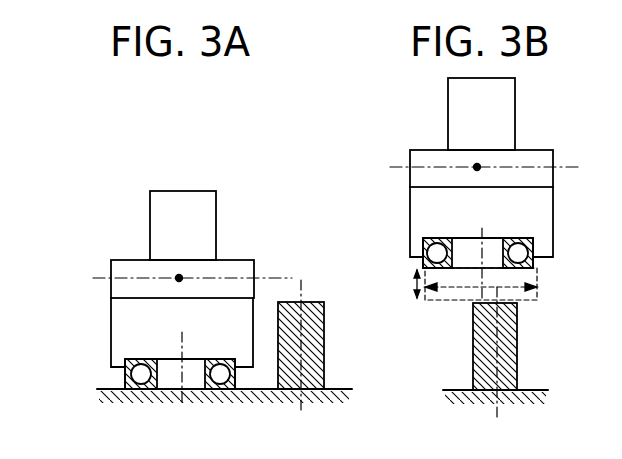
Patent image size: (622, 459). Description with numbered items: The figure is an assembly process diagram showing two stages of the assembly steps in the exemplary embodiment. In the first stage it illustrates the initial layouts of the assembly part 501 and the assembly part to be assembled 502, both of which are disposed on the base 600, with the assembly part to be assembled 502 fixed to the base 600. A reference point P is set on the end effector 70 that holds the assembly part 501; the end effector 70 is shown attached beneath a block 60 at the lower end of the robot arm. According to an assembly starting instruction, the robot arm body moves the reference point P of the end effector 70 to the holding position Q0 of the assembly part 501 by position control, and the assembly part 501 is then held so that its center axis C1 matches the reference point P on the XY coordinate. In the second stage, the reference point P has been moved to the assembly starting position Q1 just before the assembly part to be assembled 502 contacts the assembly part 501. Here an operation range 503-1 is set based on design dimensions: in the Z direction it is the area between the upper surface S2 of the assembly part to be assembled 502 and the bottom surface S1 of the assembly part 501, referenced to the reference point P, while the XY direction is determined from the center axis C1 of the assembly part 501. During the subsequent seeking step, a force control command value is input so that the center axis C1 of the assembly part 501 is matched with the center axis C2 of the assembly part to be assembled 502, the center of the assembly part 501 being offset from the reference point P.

In FIG. 3A, the main body 60 is at (210, 207).
In FIG. 3A, the end effector 70 is at (116, 286).
In FIG. 3A, the assembly part 501 is at (140, 360).
In FIG. 3A, the assembly part to be assembled 502 is at (325, 318).
In FIG. 3B, the operation range 503-1 is at (533, 281).
In FIG. 3A, the base 600 is at (335, 388).
In FIG. 3A, the reference point P is at (176, 277).
In FIG. 3B, the reference point P is at (475, 166).
In FIG. 3A, the holding position Q0 is at (76, 276).
In FIG. 3B, the assembly starting position Q1 is at (375, 170).
In FIG. 3A, the center axis of the assembly part C1 is at (180, 376).
In FIG. 3B, the center axis of the assembly part C1 is at (482, 228).
In FIG. 3B, the center axis of the assembly part to be assembled C2 is at (497, 364).
In FIG. 3B, the bottom surface of the assembly part S1 is at (473, 264).
In FIG. 3B, the upper surface of the assembly part to be assembled S2 is at (513, 310).